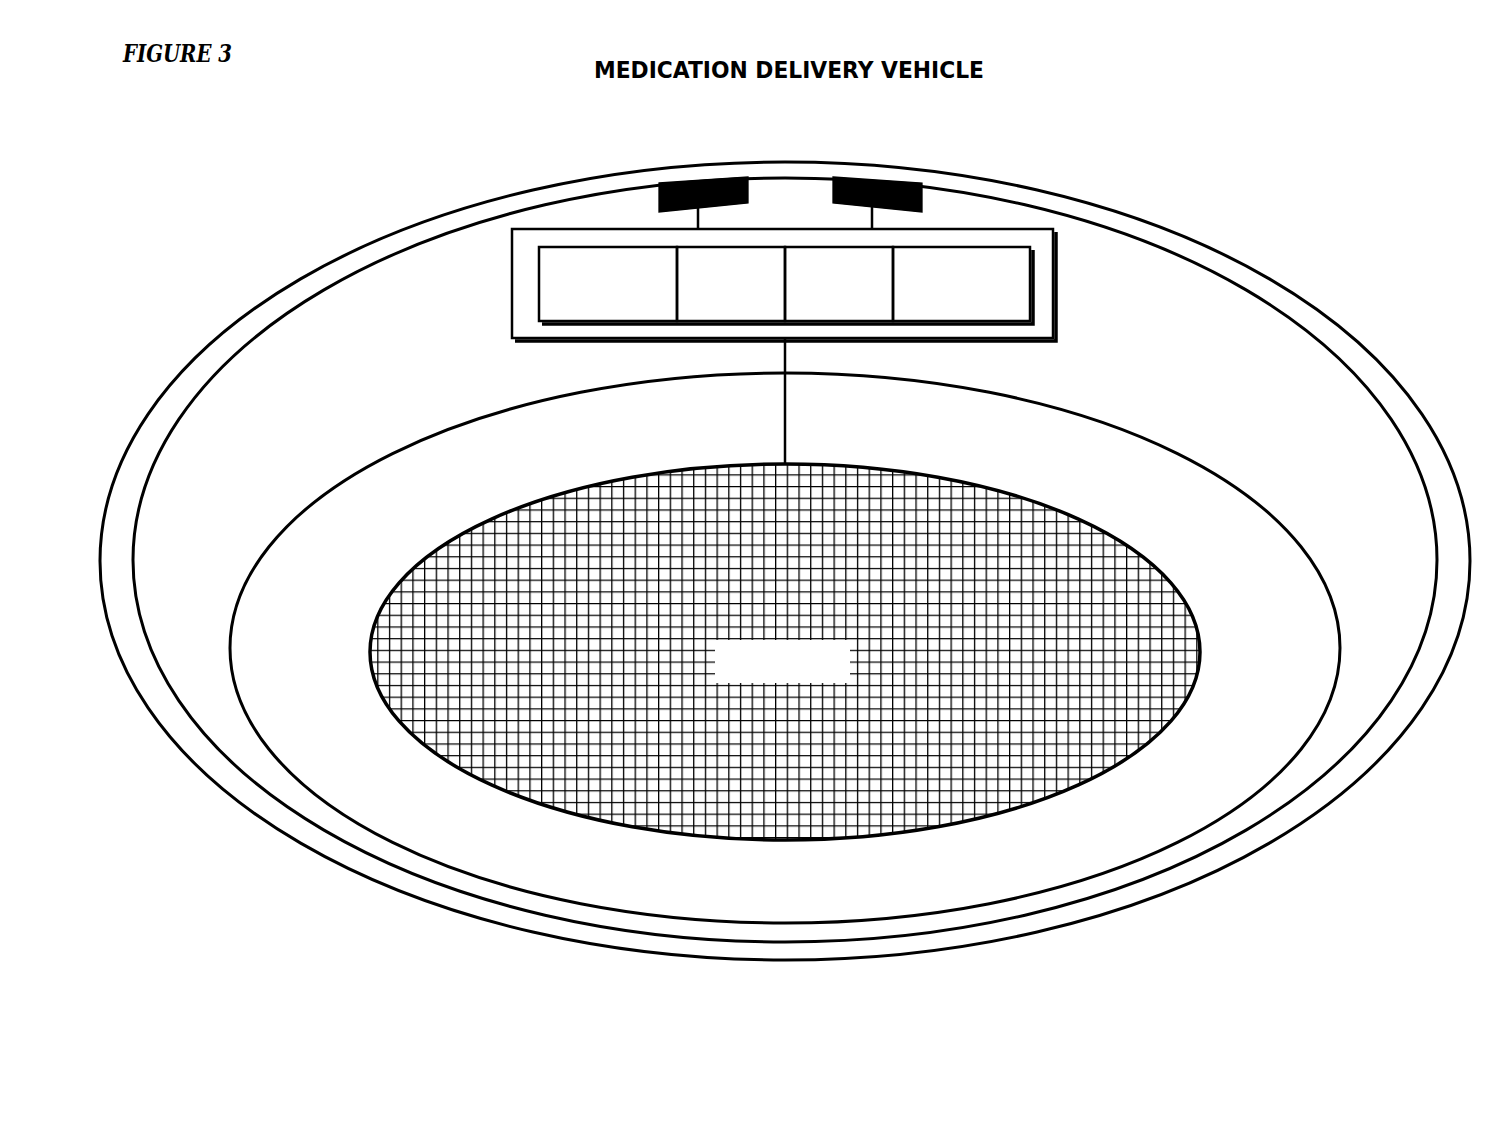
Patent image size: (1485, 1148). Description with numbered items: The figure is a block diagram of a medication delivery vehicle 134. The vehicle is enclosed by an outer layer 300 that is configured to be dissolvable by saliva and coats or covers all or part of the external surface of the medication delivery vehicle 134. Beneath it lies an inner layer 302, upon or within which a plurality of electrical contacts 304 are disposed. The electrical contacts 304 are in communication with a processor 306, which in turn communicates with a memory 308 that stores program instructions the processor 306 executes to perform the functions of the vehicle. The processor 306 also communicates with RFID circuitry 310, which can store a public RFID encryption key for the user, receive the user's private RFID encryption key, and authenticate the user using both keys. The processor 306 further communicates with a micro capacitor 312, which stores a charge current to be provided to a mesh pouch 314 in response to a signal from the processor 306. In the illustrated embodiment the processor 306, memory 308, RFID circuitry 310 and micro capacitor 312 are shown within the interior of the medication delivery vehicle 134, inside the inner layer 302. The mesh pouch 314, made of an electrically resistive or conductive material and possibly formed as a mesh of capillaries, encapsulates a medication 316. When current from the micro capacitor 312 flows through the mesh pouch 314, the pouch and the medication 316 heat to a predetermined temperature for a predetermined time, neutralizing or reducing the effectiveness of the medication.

The medication delivery vehicle 134 is at (248, 212).
The outer layer 300 is at (492, 212).
The inner layer 302 is at (1097, 180).
The electrical contacts 304 is at (865, 178).
The processor 306 is at (593, 305).
The memory 308 is at (716, 305).
The RFID circuitry 310 is at (824, 305).
The micro capacitor 312 is at (946, 313).
The mesh pouch 314 is at (996, 492).
The medication 316 is at (767, 679).